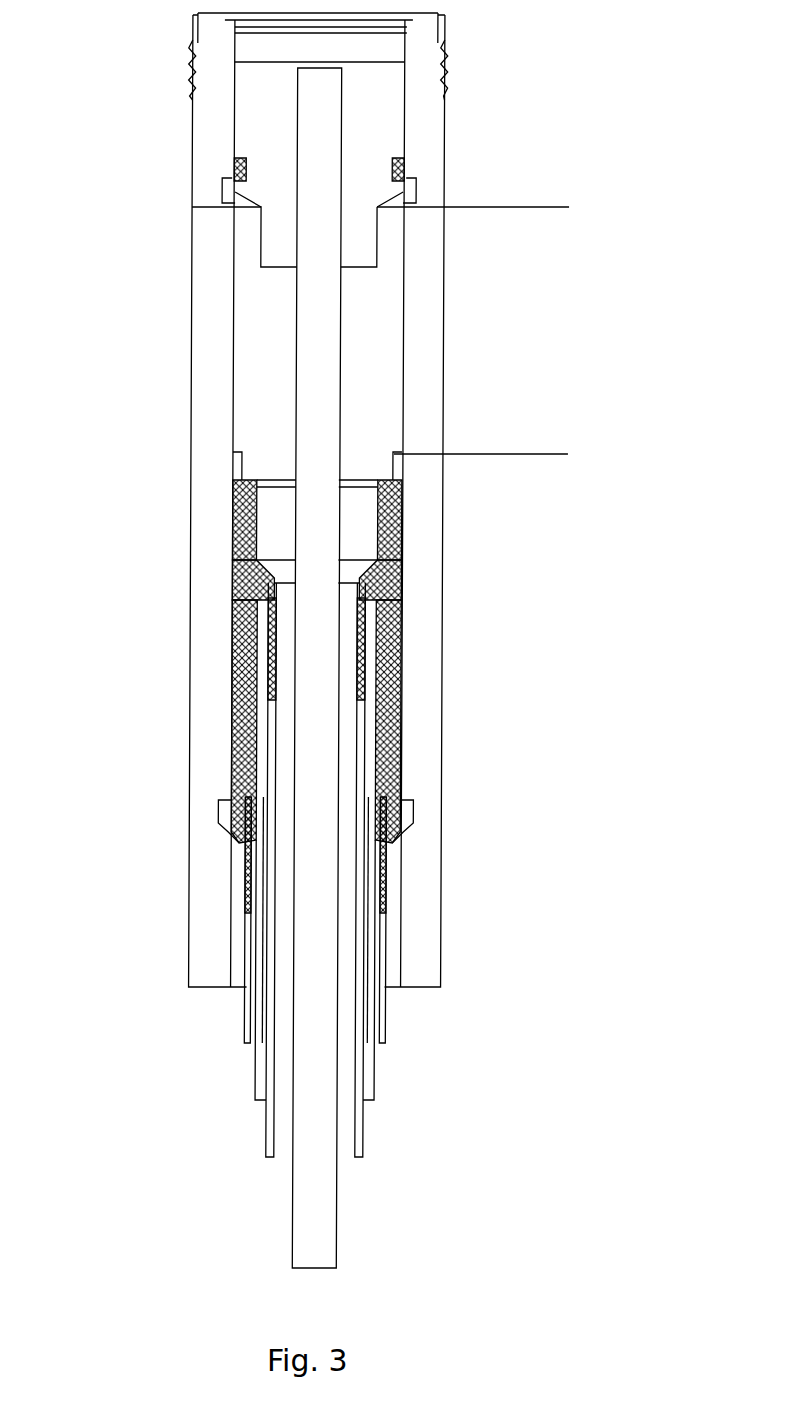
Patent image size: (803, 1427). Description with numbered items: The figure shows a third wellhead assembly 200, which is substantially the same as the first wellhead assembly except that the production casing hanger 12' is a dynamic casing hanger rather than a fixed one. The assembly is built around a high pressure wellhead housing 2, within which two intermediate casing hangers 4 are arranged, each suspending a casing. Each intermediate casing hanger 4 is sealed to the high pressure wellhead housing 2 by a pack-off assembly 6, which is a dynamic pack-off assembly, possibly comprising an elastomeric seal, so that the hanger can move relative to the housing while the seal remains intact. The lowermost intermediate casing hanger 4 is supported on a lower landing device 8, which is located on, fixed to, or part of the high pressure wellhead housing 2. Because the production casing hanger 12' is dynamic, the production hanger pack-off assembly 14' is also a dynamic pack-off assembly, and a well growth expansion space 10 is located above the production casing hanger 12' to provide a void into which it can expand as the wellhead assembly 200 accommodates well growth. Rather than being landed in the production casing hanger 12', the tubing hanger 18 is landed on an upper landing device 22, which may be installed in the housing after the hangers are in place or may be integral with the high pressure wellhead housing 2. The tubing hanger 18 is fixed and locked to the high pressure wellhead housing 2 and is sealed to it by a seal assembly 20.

The wellhead assembly 200 is at (582, 44).
The high pressure wellhead housing 2 is at (425, 163).
The tubing hanger 18 is at (260, 97).
The seal assembly 20 is at (240, 167).
The upper landing device 22 is at (227, 203).
The well growth expansion space 10 is at (572, 207).
The production hanger pack-off assembly 14' is at (178, 490).
The production casing hanger 12' is at (434, 517).
The pack-off assembly 6 is at (233, 684).
The intermediate casing hanger 4 is at (405, 655).
The lower landing device 8 is at (413, 810).